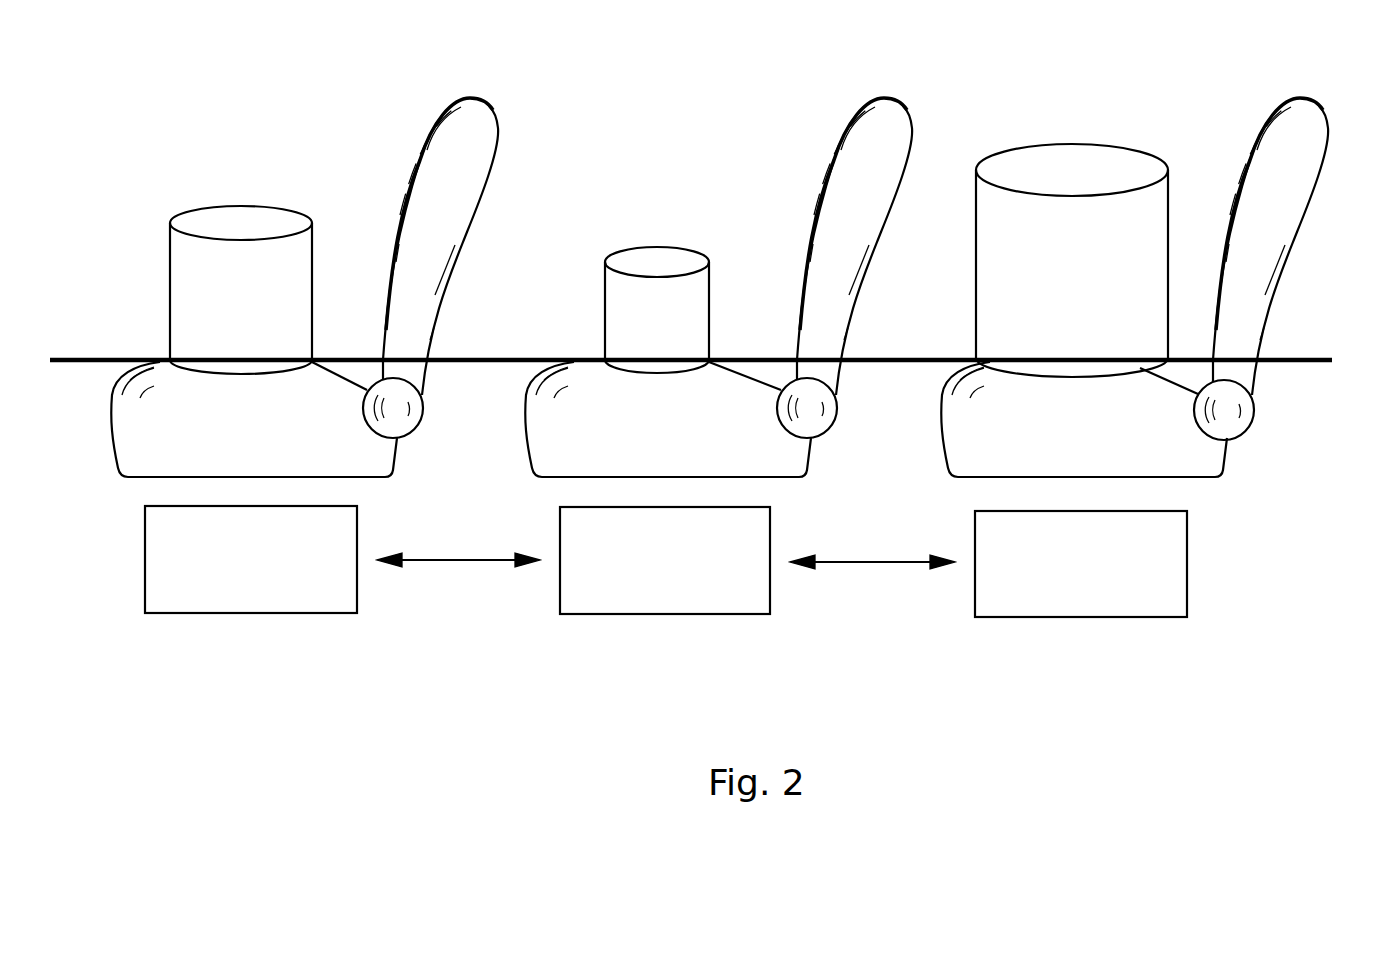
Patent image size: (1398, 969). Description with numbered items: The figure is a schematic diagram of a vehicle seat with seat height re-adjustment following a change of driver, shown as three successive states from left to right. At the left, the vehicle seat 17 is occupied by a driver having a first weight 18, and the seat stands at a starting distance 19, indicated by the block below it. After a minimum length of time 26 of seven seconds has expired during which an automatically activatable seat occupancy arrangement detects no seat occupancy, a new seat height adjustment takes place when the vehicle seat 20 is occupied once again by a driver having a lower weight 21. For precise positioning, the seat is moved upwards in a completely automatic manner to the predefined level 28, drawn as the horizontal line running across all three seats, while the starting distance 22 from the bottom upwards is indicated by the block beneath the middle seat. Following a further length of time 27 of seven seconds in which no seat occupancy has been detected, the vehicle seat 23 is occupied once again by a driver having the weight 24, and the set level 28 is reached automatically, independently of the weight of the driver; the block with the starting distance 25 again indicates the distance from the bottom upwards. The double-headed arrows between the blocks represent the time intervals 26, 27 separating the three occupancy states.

The vehicle seat 17 is at (481, 131).
The first weight 18 is at (245, 218).
The starting distance 19 is at (257, 597).
The vehicle seat 20 is at (893, 132).
The lower weight 21 is at (663, 262).
The starting distance 22 is at (673, 597).
The vehicle seat 23 is at (1313, 135).
The weight 24 is at (1078, 165).
The starting distance 25 is at (1087, 602).
The minimum length of time 26 is at (457, 563).
The further length of time 27 is at (872, 564).
The predefined level 28 is at (1307, 368).